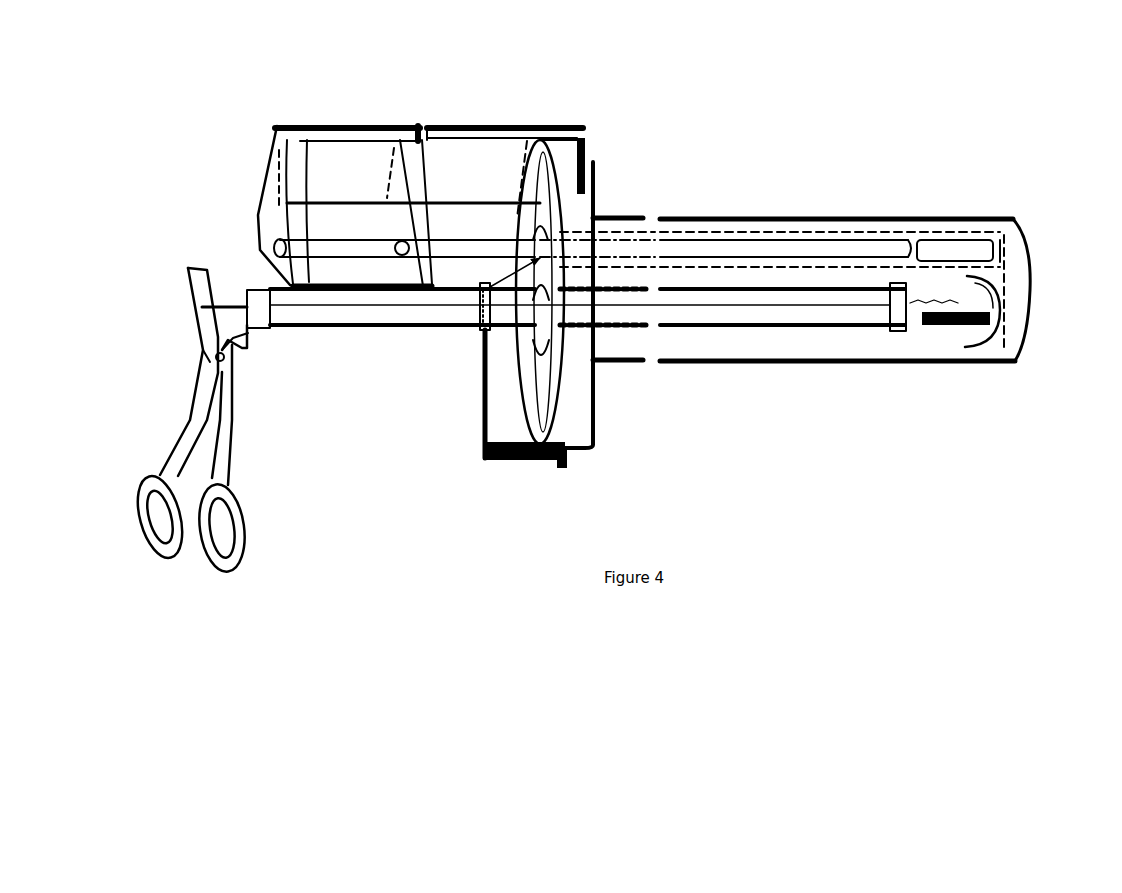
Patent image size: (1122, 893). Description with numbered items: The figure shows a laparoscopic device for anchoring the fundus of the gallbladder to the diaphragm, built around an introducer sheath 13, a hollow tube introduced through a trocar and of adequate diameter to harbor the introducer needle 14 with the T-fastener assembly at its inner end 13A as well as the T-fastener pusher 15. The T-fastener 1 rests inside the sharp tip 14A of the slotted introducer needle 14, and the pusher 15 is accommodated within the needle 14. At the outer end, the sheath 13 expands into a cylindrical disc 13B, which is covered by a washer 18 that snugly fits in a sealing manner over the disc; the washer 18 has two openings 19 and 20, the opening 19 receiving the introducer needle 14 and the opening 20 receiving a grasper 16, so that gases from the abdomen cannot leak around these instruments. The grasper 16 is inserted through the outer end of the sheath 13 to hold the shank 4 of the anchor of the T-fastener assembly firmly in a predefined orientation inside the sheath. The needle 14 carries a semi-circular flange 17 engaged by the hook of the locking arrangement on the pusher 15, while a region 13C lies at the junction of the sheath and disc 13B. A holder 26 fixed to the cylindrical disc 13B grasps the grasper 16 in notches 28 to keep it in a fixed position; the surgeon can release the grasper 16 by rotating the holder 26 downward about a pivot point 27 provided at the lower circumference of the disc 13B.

The T-fastener 1 is at (965, 267).
The shank 4 is at (940, 331).
The introducer sheath 13 is at (756, 210).
The inner end of introducer sheath 13A is at (1013, 215).
The cylindrical disc 13B is at (560, 360).
The flange collar 13C is at (597, 193).
The introducer needle 14 is at (932, 232).
The sharp tip 14A is at (975, 243).
The T-fastener pusher 15 is at (850, 240).
The grasper 16 is at (700, 275).
The semi-circular flange 17 is at (420, 185).
The washer 18 is at (567, 168).
The opening 19 is at (477, 296).
The opening 20 is at (538, 347).
The holder 26 is at (484, 466).
The pivot point 27 is at (560, 462).
The notches 28 is at (477, 328).